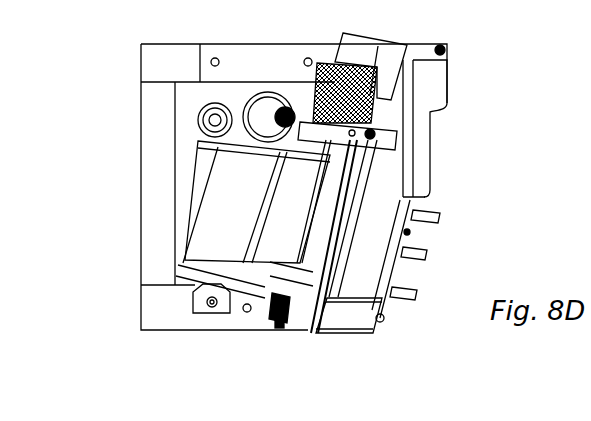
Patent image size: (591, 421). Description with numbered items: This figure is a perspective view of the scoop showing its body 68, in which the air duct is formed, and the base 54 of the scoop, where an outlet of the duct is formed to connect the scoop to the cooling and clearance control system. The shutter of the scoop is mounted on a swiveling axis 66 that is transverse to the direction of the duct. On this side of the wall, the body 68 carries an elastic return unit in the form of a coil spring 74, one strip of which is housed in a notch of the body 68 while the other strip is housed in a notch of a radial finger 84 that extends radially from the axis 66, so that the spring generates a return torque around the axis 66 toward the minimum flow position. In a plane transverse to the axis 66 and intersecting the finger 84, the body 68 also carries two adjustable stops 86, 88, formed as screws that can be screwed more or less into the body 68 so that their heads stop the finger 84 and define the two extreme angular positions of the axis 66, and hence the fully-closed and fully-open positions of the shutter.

The base 54 is at (423, 227).
The swiveling axis 66 is at (353, 50).
The body 68 is at (157, 308).
The coil spring 74 is at (413, 80).
The radial finger 84 is at (403, 170).
The adjustable stop 86 is at (370, 135).
The adjustable stop 88 is at (263, 143).